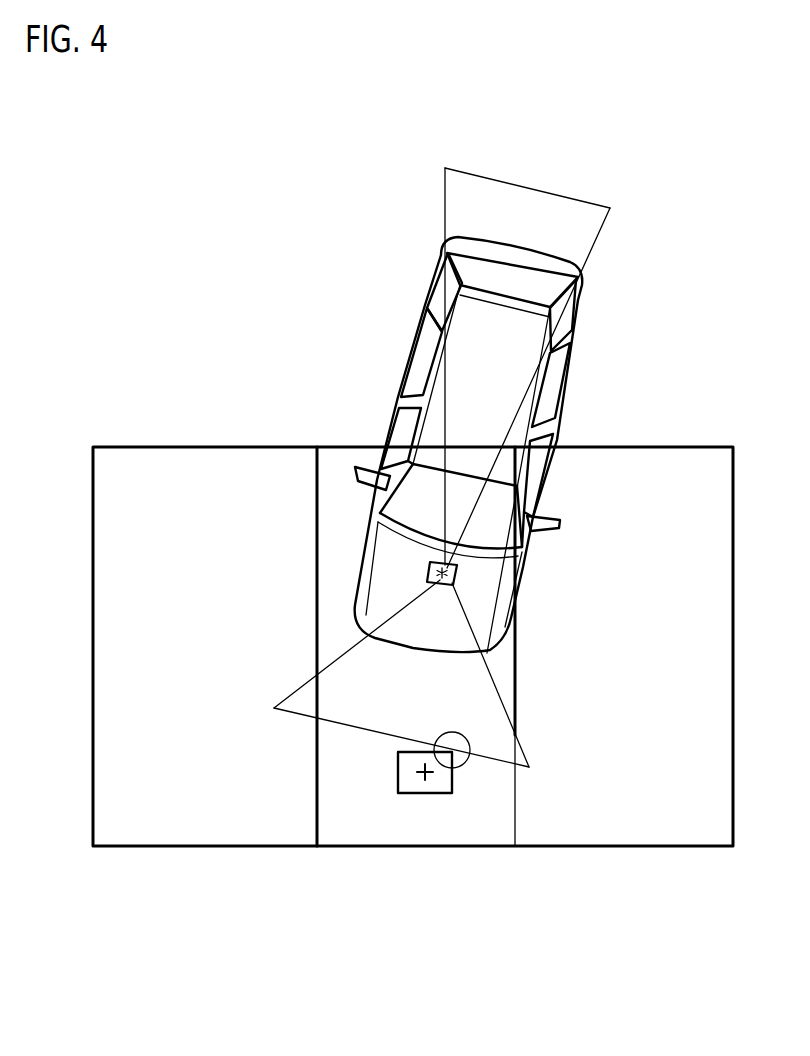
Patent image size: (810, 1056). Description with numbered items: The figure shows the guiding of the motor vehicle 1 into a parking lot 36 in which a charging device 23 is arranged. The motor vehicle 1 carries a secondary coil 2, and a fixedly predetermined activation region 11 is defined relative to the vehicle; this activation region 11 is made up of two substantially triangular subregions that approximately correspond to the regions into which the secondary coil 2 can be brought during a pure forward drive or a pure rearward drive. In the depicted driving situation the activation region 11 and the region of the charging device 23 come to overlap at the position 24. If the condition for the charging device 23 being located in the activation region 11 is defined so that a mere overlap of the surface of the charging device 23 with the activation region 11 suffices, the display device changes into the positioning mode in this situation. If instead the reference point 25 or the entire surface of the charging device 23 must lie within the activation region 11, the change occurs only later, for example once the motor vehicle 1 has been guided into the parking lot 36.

The motor vehicle 1 is at (582, 401).
The secondary coil 2 is at (456, 579).
The activation region 11 is at (355, 706).
The charging device 23 is at (452, 785).
The position 24 is at (470, 768).
The reference point 25 is at (425, 776).
The parking lot 36 is at (338, 832).